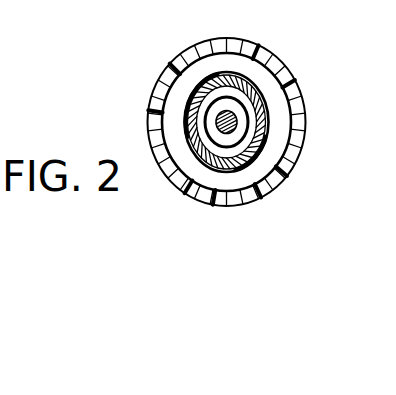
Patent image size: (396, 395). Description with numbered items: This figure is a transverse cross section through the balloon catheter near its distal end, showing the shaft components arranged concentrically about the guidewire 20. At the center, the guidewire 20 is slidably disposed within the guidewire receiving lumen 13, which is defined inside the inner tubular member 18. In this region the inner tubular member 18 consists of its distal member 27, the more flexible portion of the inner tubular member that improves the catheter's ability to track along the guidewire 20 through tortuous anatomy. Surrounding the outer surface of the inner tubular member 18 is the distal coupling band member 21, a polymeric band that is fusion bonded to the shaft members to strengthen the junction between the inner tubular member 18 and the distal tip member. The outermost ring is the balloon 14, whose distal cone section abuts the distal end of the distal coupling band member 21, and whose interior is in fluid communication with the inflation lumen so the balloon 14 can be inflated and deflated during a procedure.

The guidewire receiving lumen 13 is at (262, 158).
The balloon 14 is at (171, 57).
The inner tubular member 18 is at (260, 107).
The guidewire 20 is at (212, 122).
The distal coupling band member 21 is at (242, 75).
The distal member 27 is at (303, 143).